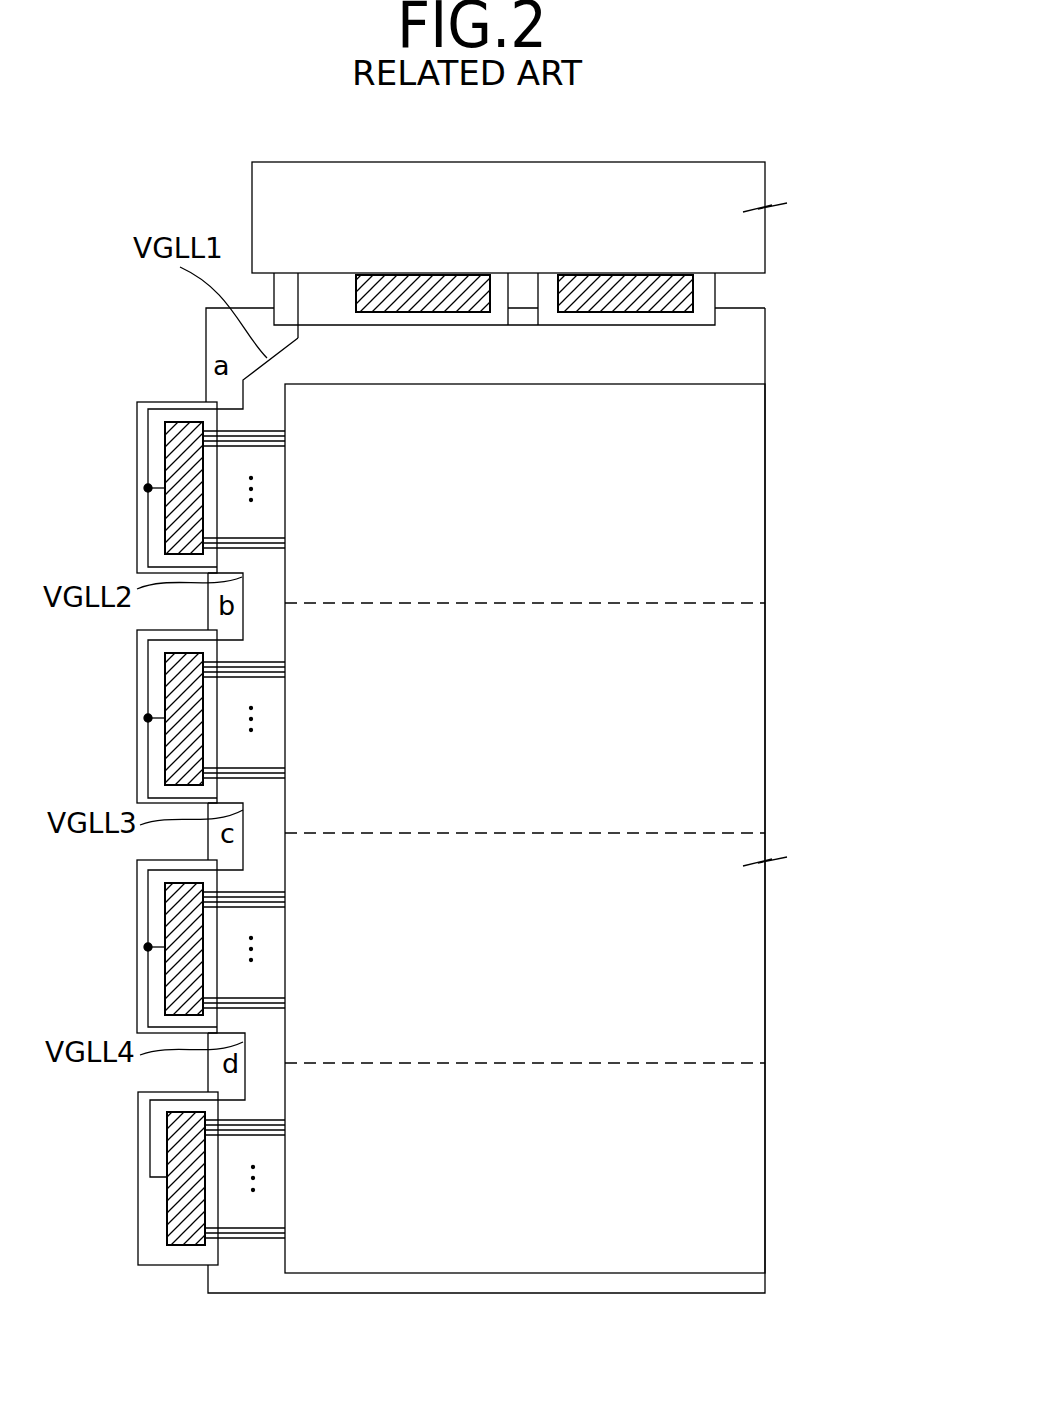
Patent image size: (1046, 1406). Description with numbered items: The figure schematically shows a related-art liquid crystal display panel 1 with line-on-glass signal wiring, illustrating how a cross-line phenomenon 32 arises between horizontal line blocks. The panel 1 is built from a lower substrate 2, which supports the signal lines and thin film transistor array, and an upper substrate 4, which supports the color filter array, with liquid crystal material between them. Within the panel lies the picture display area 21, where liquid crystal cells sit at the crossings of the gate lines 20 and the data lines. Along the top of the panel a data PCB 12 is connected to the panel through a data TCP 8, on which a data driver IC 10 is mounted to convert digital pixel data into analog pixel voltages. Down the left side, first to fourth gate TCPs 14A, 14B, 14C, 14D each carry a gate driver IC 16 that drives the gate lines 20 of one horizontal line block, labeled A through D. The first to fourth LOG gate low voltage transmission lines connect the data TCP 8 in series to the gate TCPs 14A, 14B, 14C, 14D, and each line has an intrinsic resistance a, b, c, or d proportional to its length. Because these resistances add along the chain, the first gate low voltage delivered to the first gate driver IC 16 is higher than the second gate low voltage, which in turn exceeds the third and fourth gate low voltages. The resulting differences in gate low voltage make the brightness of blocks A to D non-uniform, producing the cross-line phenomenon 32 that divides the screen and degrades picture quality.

The liquid crystal display panel 1 is at (830, 780).
The lower substrate 2 is at (754, 366).
The upper substrate 4 is at (752, 428).
The data TCP 8 is at (716, 285).
The data driver IC 10 is at (578, 275).
The data PCB 12 is at (698, 176).
The first gate TCP 14A is at (197, 455).
The second gate TCP 14B is at (142, 686).
The third gate TCP 14C is at (142, 909).
The fourth gate TCP 14D is at (144, 1141).
The gate driver IC 16 is at (165, 526).
The gate lines 20 is at (275, 436).
The picture display area 21 is at (551, 680).
The cross-line phenomenon 32 is at (722, 603).